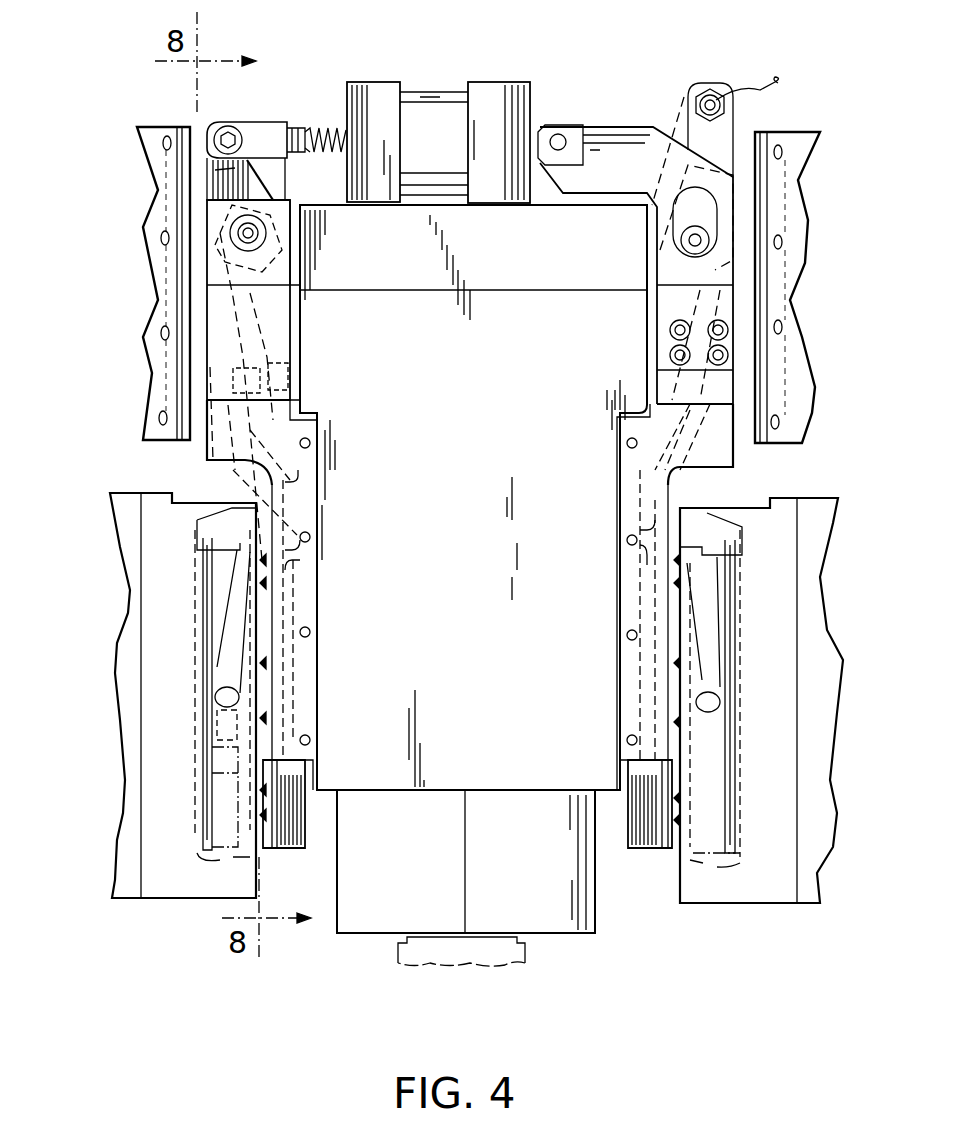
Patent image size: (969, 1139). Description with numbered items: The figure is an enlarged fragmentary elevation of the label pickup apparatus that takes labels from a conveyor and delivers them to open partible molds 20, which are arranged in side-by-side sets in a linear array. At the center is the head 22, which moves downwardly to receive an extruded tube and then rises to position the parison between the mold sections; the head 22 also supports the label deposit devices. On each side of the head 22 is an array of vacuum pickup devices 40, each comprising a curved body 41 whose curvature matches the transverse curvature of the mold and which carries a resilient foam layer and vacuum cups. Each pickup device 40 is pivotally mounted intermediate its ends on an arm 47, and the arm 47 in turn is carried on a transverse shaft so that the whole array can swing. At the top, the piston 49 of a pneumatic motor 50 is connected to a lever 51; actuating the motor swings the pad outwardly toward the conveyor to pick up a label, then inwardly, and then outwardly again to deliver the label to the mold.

The partible molds 20 is at (150, 630).
The head 22 is at (465, 601).
The pickup devices 40 is at (236, 493).
The body 41 is at (287, 833).
The arm 47 is at (335, 457).
The piston 49 is at (268, 132).
The pneumatic motor 50 is at (437, 107).
The lever 51 is at (243, 184).